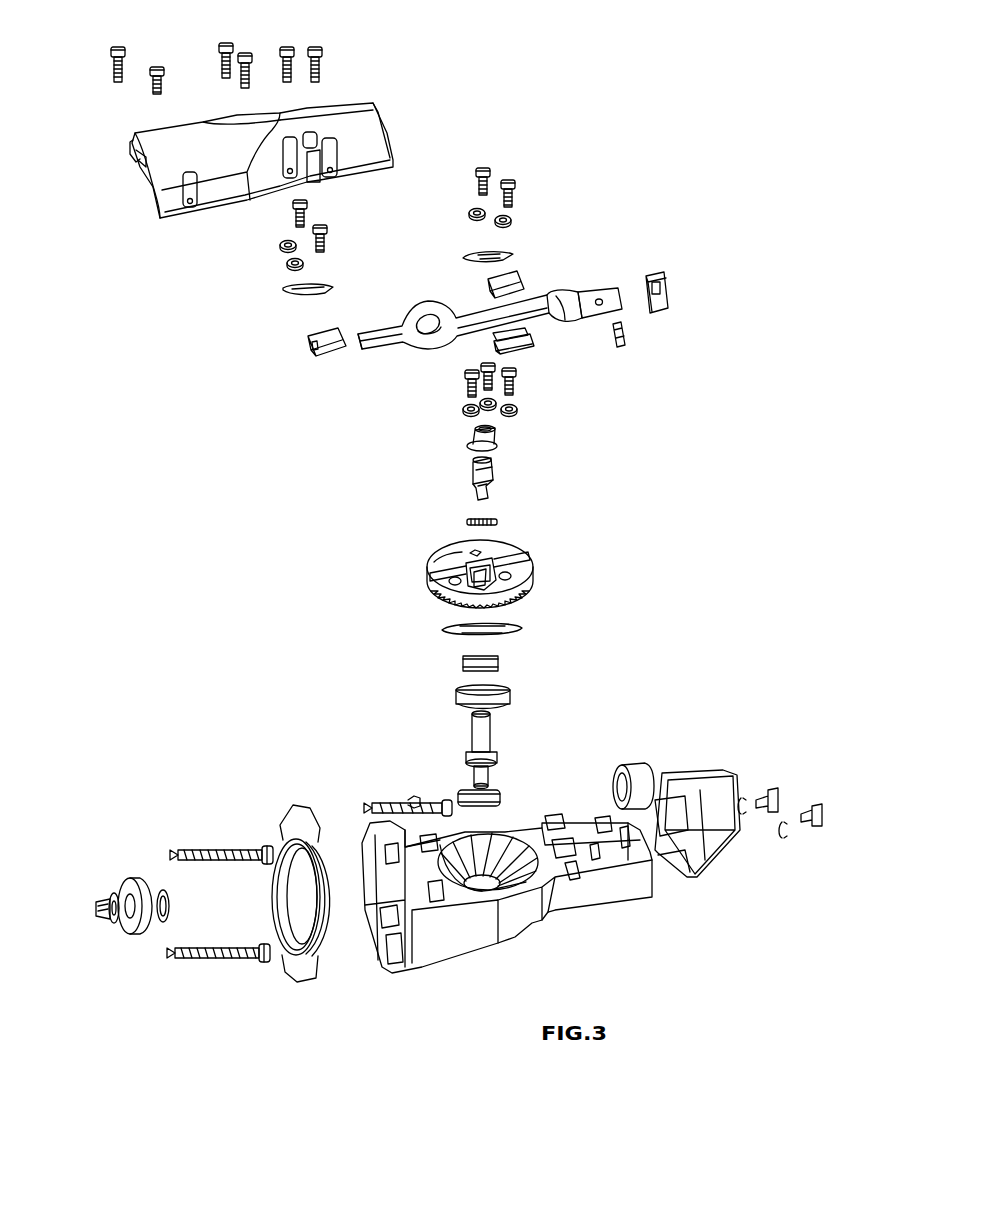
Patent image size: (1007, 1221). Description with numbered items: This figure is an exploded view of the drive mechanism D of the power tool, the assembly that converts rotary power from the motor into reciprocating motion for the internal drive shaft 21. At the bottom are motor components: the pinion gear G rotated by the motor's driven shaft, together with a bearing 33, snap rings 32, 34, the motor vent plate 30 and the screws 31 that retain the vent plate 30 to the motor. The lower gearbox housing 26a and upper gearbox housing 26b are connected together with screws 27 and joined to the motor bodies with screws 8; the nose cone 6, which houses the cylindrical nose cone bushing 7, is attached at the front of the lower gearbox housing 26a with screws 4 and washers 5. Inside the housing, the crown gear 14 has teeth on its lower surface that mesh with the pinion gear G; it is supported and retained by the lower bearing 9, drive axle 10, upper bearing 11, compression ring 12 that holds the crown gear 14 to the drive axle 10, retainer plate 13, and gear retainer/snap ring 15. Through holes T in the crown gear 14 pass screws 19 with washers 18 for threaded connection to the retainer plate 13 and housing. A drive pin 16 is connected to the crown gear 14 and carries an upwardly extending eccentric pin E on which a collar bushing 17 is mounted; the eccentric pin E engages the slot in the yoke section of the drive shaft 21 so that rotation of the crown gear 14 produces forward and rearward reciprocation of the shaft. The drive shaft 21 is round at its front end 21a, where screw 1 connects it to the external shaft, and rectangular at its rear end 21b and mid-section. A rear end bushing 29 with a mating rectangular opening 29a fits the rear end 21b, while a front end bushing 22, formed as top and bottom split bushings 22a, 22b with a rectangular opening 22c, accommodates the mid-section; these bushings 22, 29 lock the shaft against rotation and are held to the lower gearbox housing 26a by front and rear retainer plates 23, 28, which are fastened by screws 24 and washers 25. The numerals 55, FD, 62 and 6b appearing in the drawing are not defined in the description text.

The screws 27 is at (324, 50).
The upper gearbox housing 26b is at (360, 124).
The screws 24 is at (512, 182).
The washers 25 is at (498, 222).
The front retainer plate 23 is at (505, 256).
The front end bushing 22 is at (518, 272).
The top split bushing 22a is at (486, 282).
The bottom split bushing 22b is at (529, 332).
The rectangular cross sectional opening 22c is at (495, 351).
The internal drive shaft 21 is at (496, 318).
The front end 21a is at (604, 290).
The rear end 21b is at (372, 352).
The opening 55 is at (430, 336).
The rear retainer plate 28 is at (330, 288).
The rear end bushing 29 is at (332, 328).
The rectangular cross section opening 29a is at (314, 358).
The fastening device FD is at (666, 274).
The screw 1 is at (630, 341).
The screws 19 is at (520, 374).
The washers 18 is at (520, 410).
The collar bushing 17 is at (498, 437).
The eccentric pin E is at (490, 466).
The drive pin 16 is at (494, 486).
The gear retainer/snap ring 15 is at (498, 520).
The gear face 62 is at (442, 560).
The gear bore 6b is at (476, 556).
The through holes T is at (510, 574).
The drive mechanism D is at (582, 567).
The crown gear 14 is at (479, 576).
The retainer plate 13 is at (525, 630).
The compression ring 12 is at (500, 664).
The upper bearing 11 is at (512, 700).
The drive axle 10 is at (498, 758).
The lower bearing 9 is at (502, 798).
The screws 8 is at (402, 800).
The lower gearbox housing 26a is at (522, 928).
The nose cone bushing 7 is at (630, 768).
The nose cone 6 is at (690, 772).
The washers 5 is at (780, 838).
The screws 4 is at (816, 802).
The motor vent plate 30 is at (290, 805).
The screws 31 is at (240, 842).
The bearing 33 is at (130, 877).
The snap ring 34 is at (113, 893).
The snap ring 32 is at (162, 890).
The pinion gear G is at (96, 903).